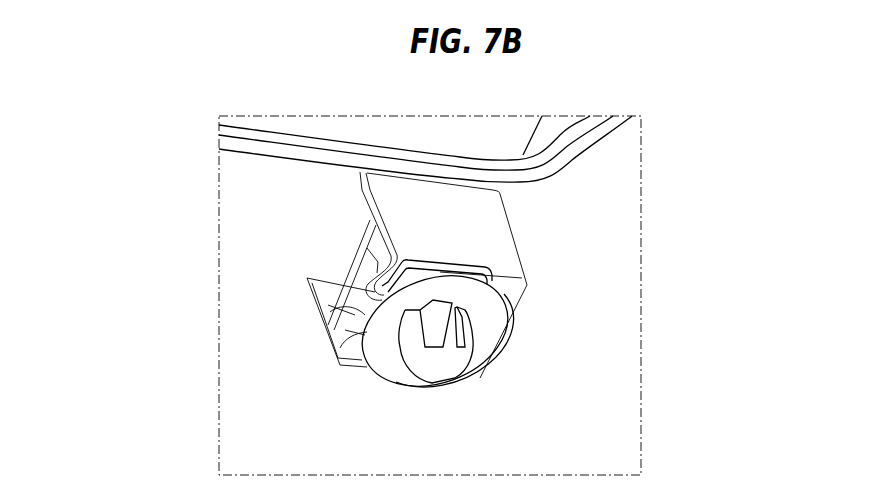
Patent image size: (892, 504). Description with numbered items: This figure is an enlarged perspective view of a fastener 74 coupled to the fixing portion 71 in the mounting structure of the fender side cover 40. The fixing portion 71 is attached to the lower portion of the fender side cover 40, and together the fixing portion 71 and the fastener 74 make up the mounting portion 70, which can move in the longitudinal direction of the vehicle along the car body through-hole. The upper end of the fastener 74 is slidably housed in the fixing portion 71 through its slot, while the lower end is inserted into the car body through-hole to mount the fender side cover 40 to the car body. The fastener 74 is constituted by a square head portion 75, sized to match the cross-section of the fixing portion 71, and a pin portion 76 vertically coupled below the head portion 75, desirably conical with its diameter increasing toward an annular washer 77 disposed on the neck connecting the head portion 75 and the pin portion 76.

The fender side cover 40 is at (264, 197).
The mounting portion 70 is at (310, 323).
The fixing portion 71 is at (475, 218).
The fastener 74 is at (550, 329).
The head portion 75 is at (477, 265).
The pin portion 76 is at (448, 363).
The washer 77 is at (488, 318).